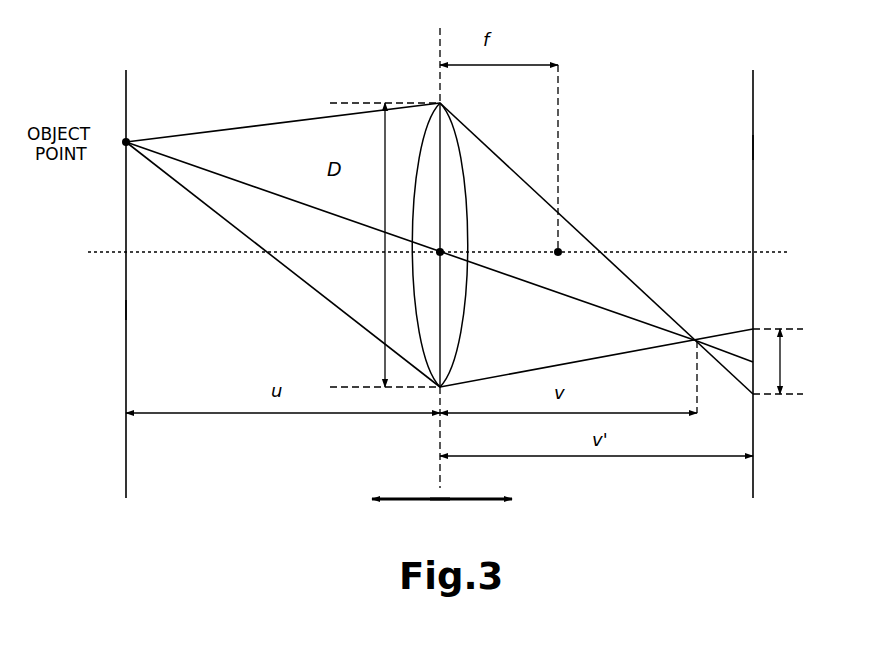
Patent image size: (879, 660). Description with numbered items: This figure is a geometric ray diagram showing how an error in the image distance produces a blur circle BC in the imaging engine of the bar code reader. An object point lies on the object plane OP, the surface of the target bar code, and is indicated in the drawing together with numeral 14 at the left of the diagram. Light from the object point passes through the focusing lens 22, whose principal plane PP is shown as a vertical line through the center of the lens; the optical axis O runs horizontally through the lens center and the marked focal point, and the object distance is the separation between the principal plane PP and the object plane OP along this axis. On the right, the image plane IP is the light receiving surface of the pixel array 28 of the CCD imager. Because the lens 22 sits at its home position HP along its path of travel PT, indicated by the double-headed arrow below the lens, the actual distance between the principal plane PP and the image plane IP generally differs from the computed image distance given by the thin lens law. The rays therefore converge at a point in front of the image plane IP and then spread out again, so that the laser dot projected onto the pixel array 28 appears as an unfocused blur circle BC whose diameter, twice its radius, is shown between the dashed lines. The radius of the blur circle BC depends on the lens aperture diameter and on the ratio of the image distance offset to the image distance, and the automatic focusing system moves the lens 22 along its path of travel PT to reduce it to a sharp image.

The object plane / object 14 is at (126, 309).
The focusing lens 22 is at (455, 202).
The pixel array 28 is at (753, 147).
The object plane OP is at (126, 89).
The image plane IP is at (753, 95).
The principal plane PP is at (440, 36).
The optical axis O is at (774, 252).
The blur circle BC is at (814, 332).
The path of travel PT is at (458, 494).
The home position HP is at (440, 501).